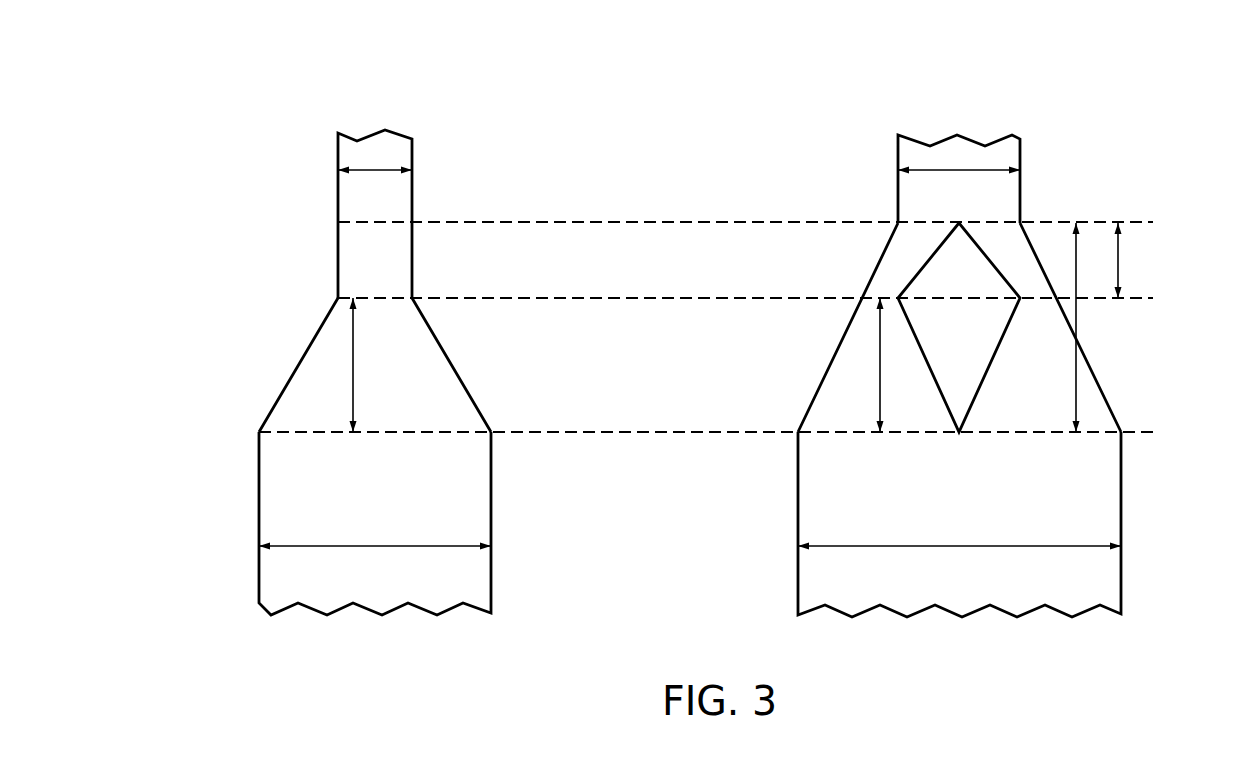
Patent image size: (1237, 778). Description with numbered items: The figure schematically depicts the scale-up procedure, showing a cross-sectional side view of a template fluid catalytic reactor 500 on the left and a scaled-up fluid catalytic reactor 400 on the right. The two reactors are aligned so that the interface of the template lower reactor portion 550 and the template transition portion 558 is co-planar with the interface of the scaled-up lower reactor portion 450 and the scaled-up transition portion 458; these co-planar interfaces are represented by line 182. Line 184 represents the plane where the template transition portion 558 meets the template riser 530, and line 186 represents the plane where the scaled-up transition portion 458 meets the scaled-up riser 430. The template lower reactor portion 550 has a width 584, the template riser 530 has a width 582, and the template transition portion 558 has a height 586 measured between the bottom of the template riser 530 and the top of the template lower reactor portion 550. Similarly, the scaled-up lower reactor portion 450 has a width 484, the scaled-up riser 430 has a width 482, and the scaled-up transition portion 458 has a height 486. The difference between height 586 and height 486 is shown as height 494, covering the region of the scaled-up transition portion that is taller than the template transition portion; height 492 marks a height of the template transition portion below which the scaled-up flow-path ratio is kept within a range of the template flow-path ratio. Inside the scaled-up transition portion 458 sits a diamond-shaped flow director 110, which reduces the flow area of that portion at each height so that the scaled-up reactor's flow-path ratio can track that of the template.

The template fluid catalytic reactor 500 is at (616, 142).
The scaled-up fluid catalytic reactor 400 is at (1157, 142).
The template riser 530 is at (338, 178).
The template transition portion 558 is at (297, 367).
The template lower reactor portion 550 is at (259, 520).
The width 582 is at (387, 170).
The width 584 is at (375, 546).
The height 586 is at (354, 398).
The scaled-up riser 430 is at (898, 178).
The scaled-up transition portion 458 is at (837, 355).
The scaled-up lower reactor portion 450 is at (798, 520).
The flow director 110 is at (987, 377).
The width 482 is at (1003, 170).
The width 484 is at (990, 546).
The height 486 is at (1076, 317).
The height 492 is at (880, 410).
The height 494 is at (1118, 257).
The line 186 is at (643, 222).
The line 184 is at (643, 298).
The line 182 is at (632, 432).